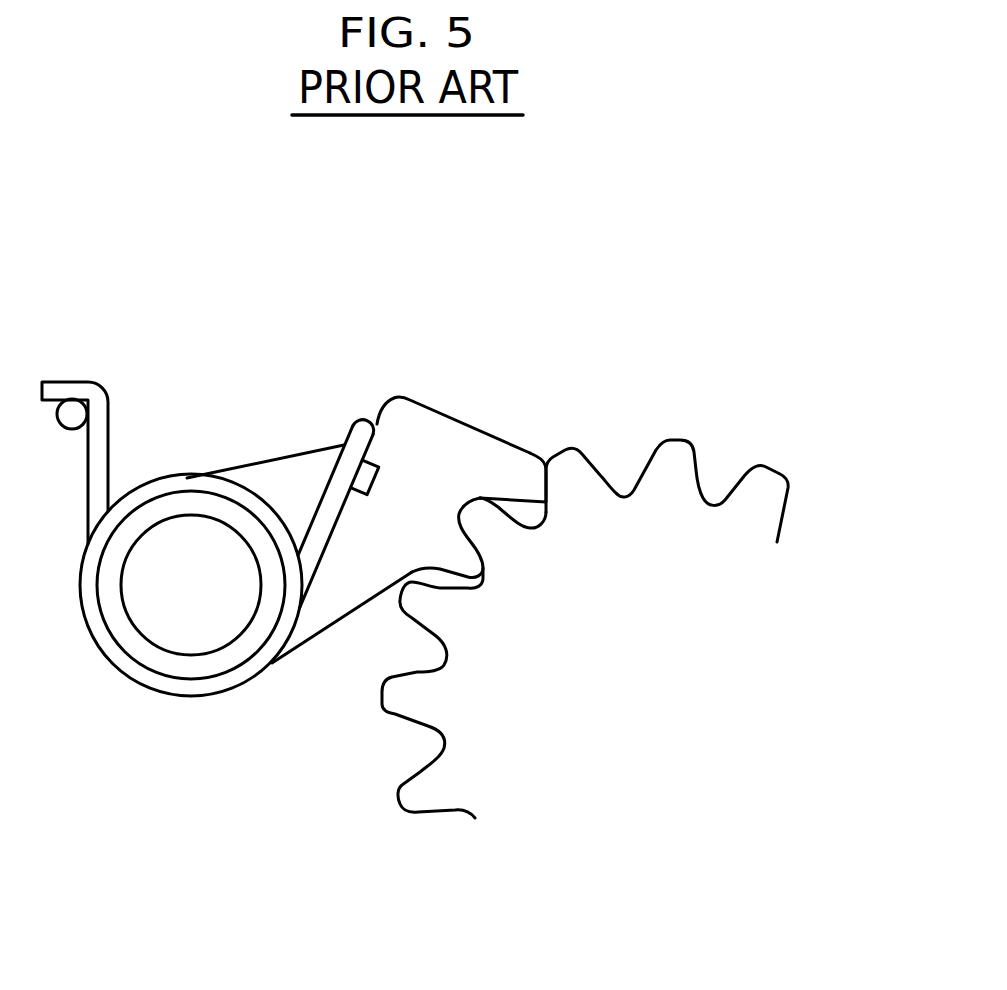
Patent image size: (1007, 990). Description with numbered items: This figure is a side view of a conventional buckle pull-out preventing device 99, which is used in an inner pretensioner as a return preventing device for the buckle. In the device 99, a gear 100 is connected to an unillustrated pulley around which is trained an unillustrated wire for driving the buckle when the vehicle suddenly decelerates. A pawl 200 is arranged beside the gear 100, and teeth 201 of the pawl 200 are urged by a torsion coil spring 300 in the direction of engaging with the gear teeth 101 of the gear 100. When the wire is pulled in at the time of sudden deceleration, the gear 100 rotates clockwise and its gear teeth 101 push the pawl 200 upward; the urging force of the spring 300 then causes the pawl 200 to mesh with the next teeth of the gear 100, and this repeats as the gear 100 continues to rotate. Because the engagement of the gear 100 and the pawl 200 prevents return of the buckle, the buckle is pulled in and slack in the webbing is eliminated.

The buckle pull-out preventing device 99 is at (368, 308).
The gear 100 is at (690, 463).
The gear teeth 101 is at (567, 458).
The pawl 200 is at (472, 446).
The teeth 201 is at (517, 477).
The torsion coil spring 300 is at (190, 695).